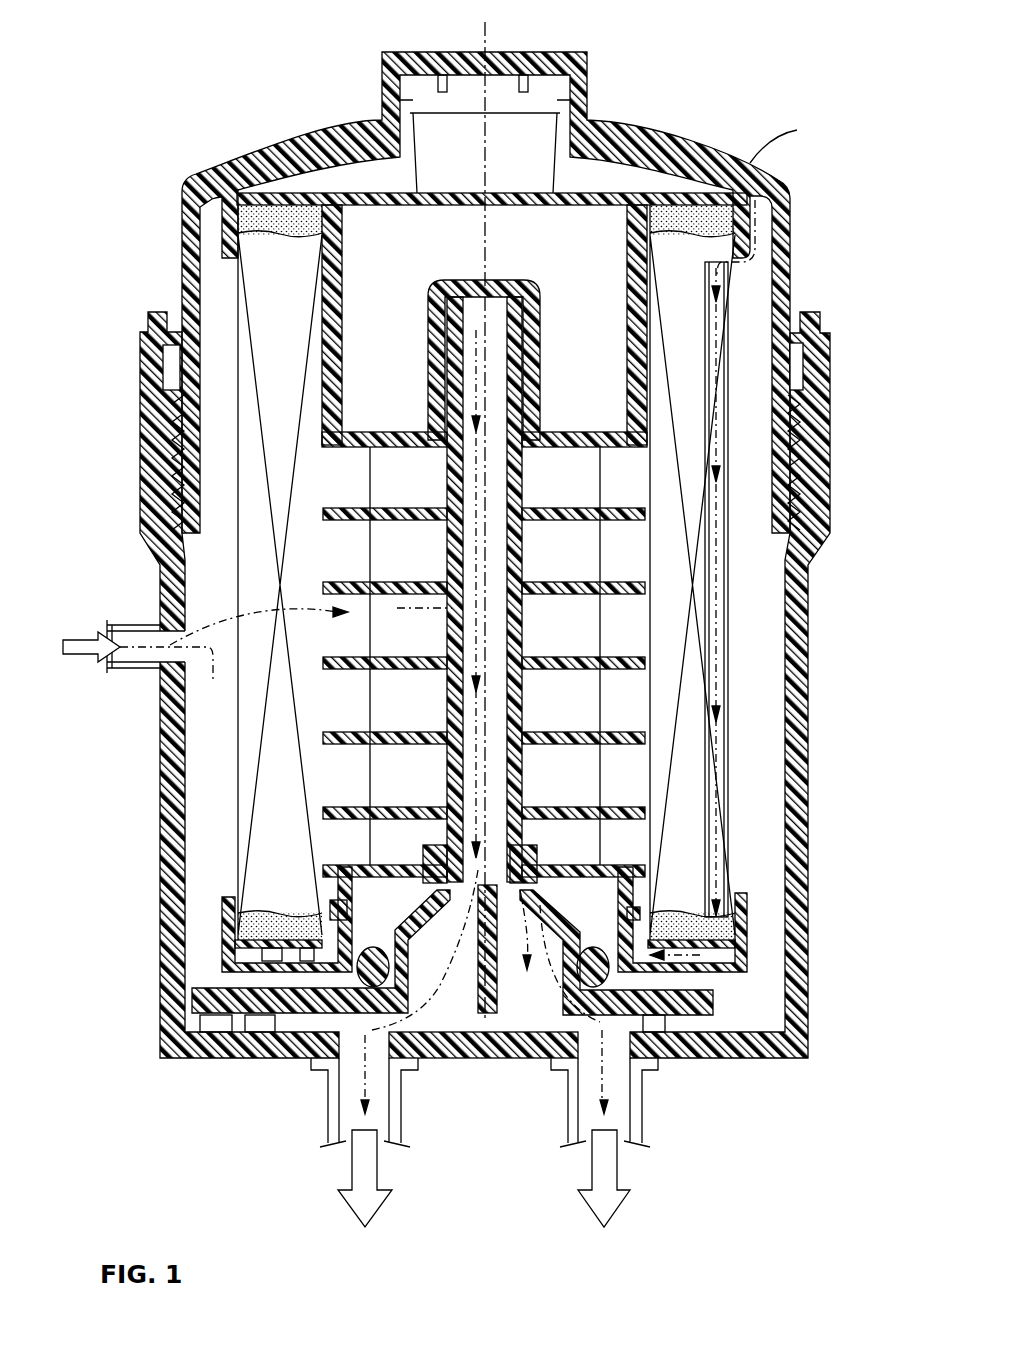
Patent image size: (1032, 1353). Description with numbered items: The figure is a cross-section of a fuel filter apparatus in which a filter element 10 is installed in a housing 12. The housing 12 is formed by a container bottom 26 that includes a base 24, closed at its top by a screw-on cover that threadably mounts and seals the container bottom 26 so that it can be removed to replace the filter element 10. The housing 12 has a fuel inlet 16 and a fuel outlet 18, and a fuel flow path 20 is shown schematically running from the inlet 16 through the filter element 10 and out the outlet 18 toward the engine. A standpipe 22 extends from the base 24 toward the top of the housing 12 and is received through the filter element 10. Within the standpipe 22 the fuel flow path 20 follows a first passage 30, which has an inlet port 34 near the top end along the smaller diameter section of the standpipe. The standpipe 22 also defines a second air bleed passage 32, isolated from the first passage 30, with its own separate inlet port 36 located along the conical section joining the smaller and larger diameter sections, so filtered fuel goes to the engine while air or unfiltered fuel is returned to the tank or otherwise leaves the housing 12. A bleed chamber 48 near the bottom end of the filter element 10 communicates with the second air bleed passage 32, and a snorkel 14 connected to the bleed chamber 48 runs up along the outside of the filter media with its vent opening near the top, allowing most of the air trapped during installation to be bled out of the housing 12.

The filter element 10 is at (745, 288).
The housing 12 is at (848, 522).
The snorkel 14 is at (745, 600).
The fuel inlet 16 is at (167, 637).
The fuel outlet 18 is at (353, 1048).
The fuel flow path 20 is at (175, 690).
The standpipe 22 is at (522, 683).
The base 24 is at (773, 1053).
The container bottom 26 is at (803, 917).
The first passage 30 is at (455, 330).
The second air bleed passage 32 is at (540, 975).
The inlet port 34 is at (473, 320).
The inlet port 36 is at (500, 1003).
The bleed chamber 48 is at (383, 900).